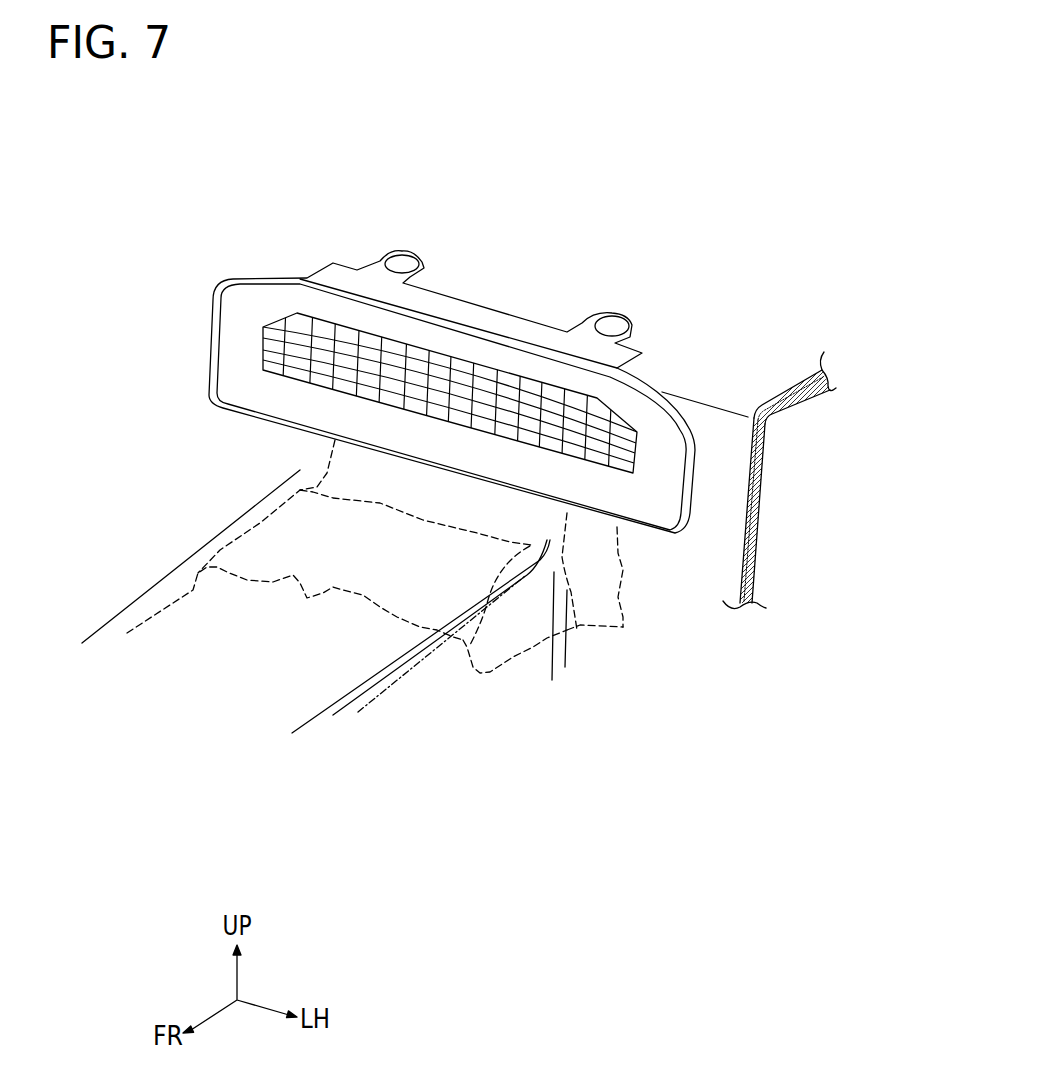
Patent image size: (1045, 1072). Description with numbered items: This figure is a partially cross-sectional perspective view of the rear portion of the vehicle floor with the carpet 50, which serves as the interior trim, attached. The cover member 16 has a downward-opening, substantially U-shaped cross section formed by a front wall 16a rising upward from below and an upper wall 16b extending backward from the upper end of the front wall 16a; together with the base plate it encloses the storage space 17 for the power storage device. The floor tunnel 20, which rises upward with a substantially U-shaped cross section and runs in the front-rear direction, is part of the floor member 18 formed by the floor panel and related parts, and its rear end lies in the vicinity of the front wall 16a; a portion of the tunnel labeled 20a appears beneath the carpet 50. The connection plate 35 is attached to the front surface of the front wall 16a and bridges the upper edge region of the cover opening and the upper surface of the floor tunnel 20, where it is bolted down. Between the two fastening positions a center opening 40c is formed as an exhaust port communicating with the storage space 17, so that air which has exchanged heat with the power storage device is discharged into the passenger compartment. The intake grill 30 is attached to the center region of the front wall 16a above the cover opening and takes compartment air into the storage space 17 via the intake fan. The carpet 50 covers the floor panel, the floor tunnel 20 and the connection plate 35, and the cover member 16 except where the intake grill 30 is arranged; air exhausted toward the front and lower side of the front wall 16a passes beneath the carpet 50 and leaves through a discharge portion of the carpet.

The intake grill 30 is at (473, 352).
The center opening 40c is at (291, 573).
The flange portion 20a is at (260, 632).
The connection plate 35 is at (516, 657).
The floor tunnel 20 is at (405, 718).
The floor member 18 is at (324, 691).
The cover member 16 is at (790, 480).
The upper wall 16b is at (782, 412).
The front wall 16a is at (765, 532).
The carpet 50 is at (743, 545).
The storage space 17 is at (772, 576).